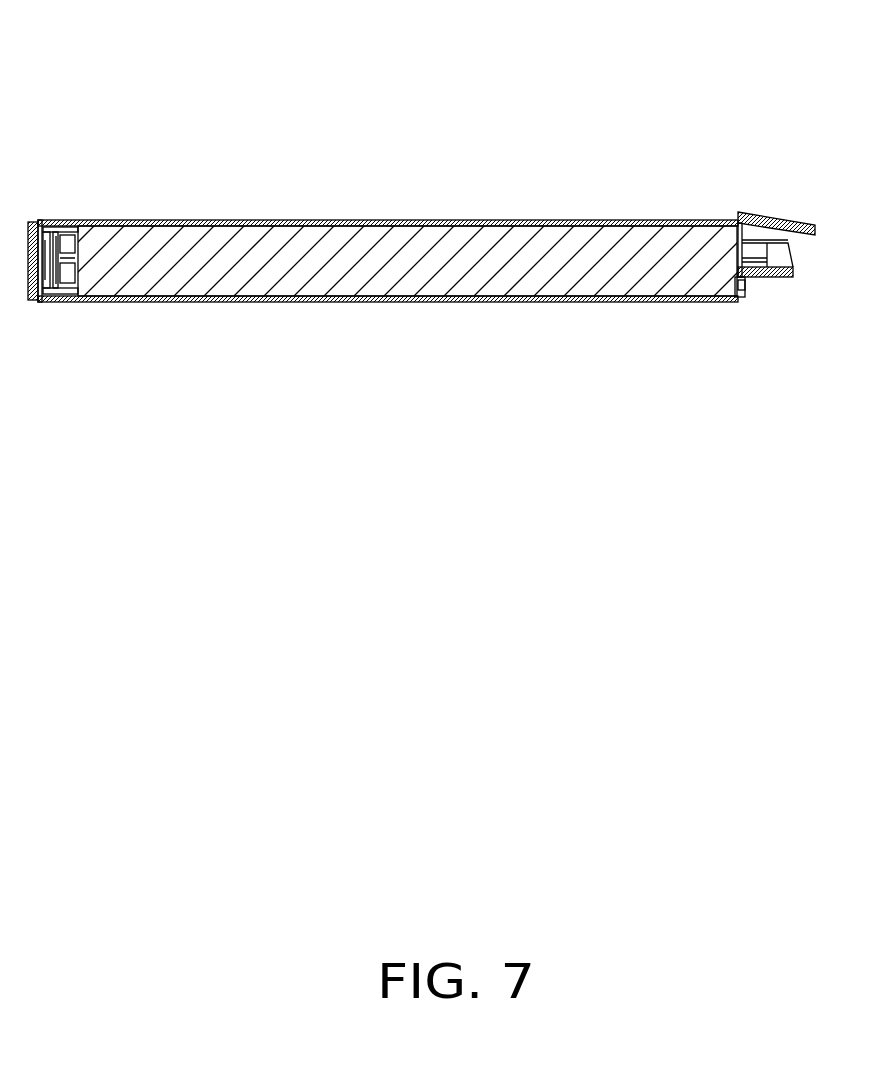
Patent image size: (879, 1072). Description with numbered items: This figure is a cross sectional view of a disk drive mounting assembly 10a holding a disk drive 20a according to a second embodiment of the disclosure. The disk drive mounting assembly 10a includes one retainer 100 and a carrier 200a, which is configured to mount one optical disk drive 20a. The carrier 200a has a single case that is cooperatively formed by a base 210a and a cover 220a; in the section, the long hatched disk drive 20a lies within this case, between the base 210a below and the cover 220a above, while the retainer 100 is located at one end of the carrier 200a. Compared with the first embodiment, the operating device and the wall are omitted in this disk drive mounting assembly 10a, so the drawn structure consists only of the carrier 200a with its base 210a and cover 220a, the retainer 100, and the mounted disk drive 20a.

The disk drive mounting assembly 10a is at (728, 62).
The carrier 200a is at (615, 122).
The base 210a is at (548, 295).
The cover 220a is at (619, 223).
The retainer 100 is at (775, 252).
The disk drive 20a is at (182, 260).